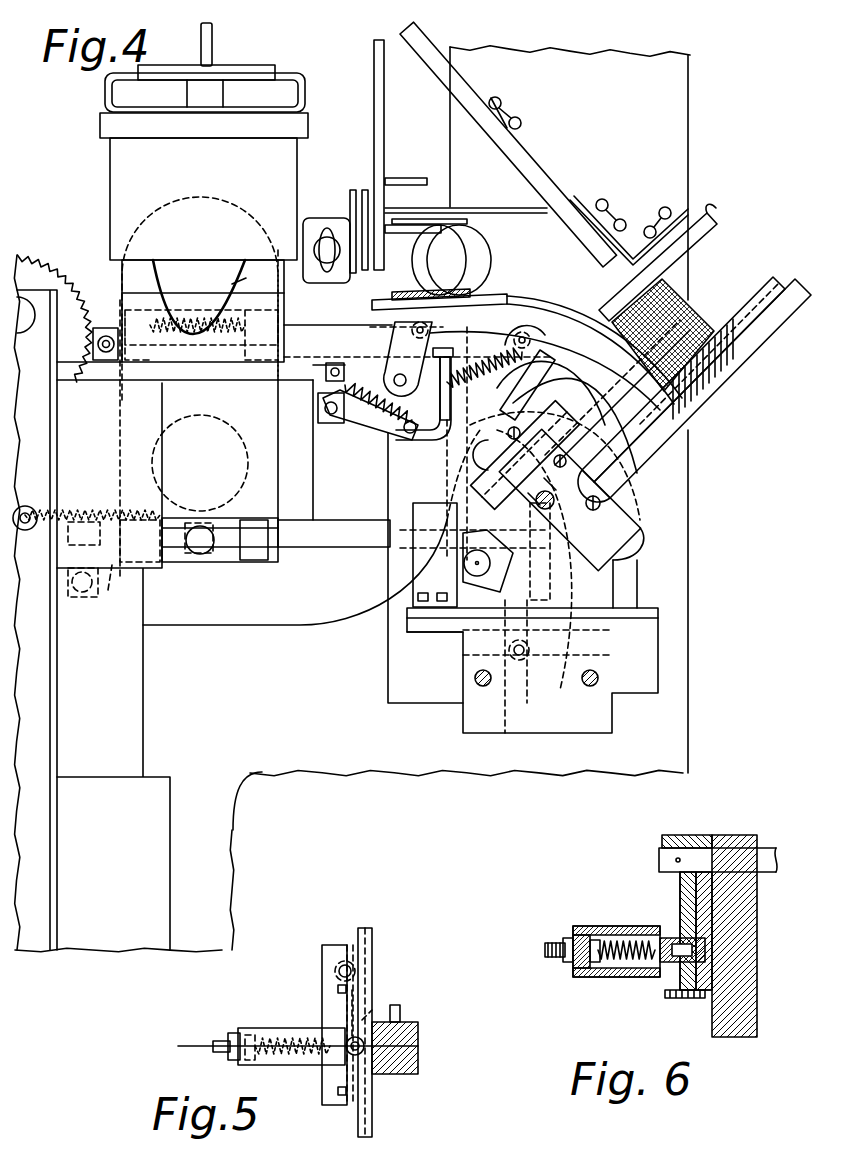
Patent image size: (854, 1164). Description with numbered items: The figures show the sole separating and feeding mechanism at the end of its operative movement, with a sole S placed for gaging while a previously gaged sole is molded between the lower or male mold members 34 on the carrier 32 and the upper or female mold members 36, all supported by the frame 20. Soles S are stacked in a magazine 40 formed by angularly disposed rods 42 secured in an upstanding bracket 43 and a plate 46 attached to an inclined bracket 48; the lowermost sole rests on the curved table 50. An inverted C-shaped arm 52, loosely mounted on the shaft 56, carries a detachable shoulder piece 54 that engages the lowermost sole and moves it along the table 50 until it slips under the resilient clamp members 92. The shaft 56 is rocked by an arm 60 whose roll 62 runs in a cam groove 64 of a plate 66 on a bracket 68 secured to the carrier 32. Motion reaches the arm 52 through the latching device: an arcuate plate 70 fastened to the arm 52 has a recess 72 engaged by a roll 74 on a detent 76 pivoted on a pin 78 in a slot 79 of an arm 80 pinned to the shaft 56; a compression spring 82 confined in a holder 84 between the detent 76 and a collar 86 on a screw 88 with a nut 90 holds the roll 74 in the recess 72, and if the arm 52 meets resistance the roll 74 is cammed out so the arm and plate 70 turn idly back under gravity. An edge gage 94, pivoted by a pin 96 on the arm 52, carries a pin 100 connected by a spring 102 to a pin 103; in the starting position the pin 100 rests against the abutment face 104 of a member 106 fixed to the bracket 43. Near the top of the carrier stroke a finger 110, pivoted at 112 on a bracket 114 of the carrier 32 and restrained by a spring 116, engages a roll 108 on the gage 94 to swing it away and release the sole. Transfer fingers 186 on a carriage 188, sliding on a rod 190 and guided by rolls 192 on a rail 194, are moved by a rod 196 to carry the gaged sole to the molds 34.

In FIG. 4, the frame 20 is at (327, 752).
In FIG. 4, the platform or carrier 32 is at (300, 505).
In FIG. 4, the lower or male mold members 34 is at (245, 222).
In FIG. 4, the upper or female mold members 36 is at (137, 165).
In FIG. 4, the magazine 40 is at (740, 272).
In FIG. 4, the bars or rods 42 is at (775, 285).
In FIG. 4, the upstanding bracket 43 is at (585, 393).
In FIG. 4, the plate 46 is at (712, 210).
In FIG. 4, the inclined bracket 48 is at (530, 170).
In FIG. 4, the platform or table 50 is at (560, 322).
In FIG. 4, the arm 52 is at (540, 300).
In FIG. 5, the arm 52 is at (415, 1072).
In FIG. 6, the arm 52 is at (737, 915).
In FIG. 4, the shoulder piece 54 is at (505, 293).
In FIG. 4, the shaft 56 is at (463, 568).
In FIG. 6, the shaft 56 is at (752, 858).
In FIG. 4, the arm 60 is at (487, 603).
In FIG. 4, the roll 62 is at (505, 690).
In FIG. 4, the cam groove 64 is at (535, 690).
In FIG. 4, the plate 66 is at (392, 660).
In FIG. 4, the bracket 68 is at (372, 518).
In FIG. 4, the arcuate plate 70 is at (430, 485).
In FIG. 5, the arcuate plate 70 is at (374, 952).
In FIG. 6, the arcuate plate 70 is at (694, 908).
In FIG. 6, the recess 72 is at (700, 962).
In FIG. 4, the roll 74 is at (626, 460).
In FIG. 5, the roll 74 is at (350, 1058).
In FIG. 6, the roll 74 is at (692, 948).
In FIG. 4, the detent 76 is at (570, 448).
In FIG. 5, the detent 76 is at (378, 1010).
In FIG. 5, the pin 78 is at (338, 972).
In FIG. 4, the slot 79 is at (500, 450).
In FIG. 5, the slot 79 is at (358, 1008).
In FIG. 4, the arm 80 is at (535, 425).
In FIG. 5, the arm 80 is at (332, 950).
In FIG. 6, the arm 80 is at (680, 893).
In FIG. 5, the compression spring 82 is at (273, 1035).
In FIG. 6, the compression spring 82 is at (612, 977).
In FIG. 4, the holder 84 is at (525, 455).
In FIG. 5, the holder 84 is at (248, 1030).
In FIG. 6, the holder 84 is at (586, 928).
In FIG. 4, the collar 86 is at (575, 505).
In FIG. 6, the collar 86 is at (590, 965).
In FIG. 4, the screw 88 is at (600, 503).
In FIG. 5, the screw 88 is at (222, 1040).
In FIG. 6, the screw 88 is at (550, 950).
In FIG. 5, the nut 90 is at (232, 1058).
In FIG. 6, the nut 90 is at (568, 942).
In FIG. 4, the resilient clamp members 92 is at (470, 248).
In FIG. 4, the finger or edge gage 94 is at (368, 415).
In FIG. 4, the pin 96 is at (386, 375).
In FIG. 4, the pin 100 is at (484, 378).
In FIG. 4, the spring 102 is at (500, 345).
In FIG. 4, the pin 103 is at (544, 370).
In FIG. 4, the abutment face 104 is at (560, 372).
In FIG. 4, the member 106 is at (535, 372).
In FIG. 4, the roll 108 is at (410, 334).
In FIG. 4, the finger 110 is at (447, 357).
In FIG. 4, the pivot 112 is at (331, 414).
In FIG. 4, the bracket 114 is at (325, 383).
In FIG. 4, the spring 116 is at (405, 442).
In FIG. 4, the transfer fingers 186 is at (152, 286).
In FIG. 4, the carriage 188 is at (120, 420).
In FIG. 4, the rod 190 is at (315, 540).
In FIG. 4, the rolls 192 is at (238, 352).
In FIG. 4, the rail 194 is at (296, 338).
In FIG. 4, the rod 196 is at (86, 557).
In FIG. 4, the soles S is at (406, 272).